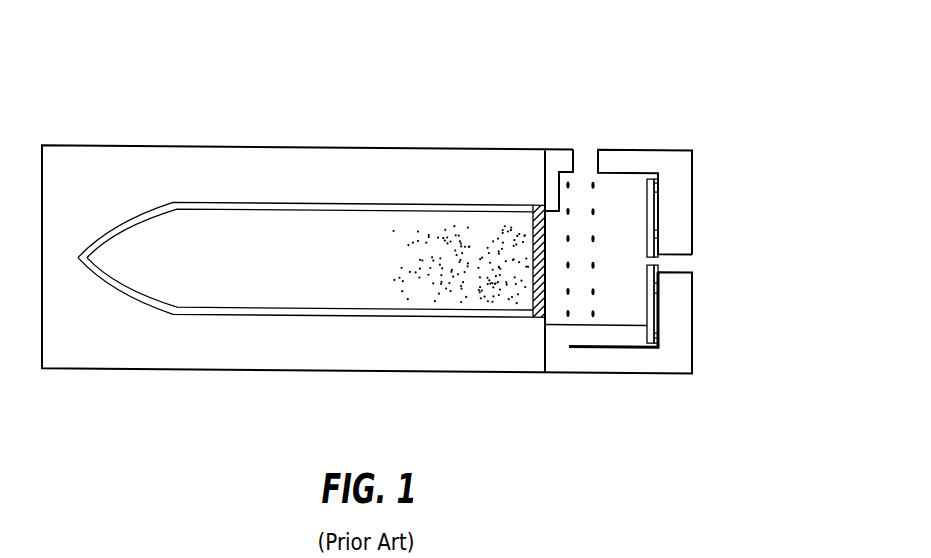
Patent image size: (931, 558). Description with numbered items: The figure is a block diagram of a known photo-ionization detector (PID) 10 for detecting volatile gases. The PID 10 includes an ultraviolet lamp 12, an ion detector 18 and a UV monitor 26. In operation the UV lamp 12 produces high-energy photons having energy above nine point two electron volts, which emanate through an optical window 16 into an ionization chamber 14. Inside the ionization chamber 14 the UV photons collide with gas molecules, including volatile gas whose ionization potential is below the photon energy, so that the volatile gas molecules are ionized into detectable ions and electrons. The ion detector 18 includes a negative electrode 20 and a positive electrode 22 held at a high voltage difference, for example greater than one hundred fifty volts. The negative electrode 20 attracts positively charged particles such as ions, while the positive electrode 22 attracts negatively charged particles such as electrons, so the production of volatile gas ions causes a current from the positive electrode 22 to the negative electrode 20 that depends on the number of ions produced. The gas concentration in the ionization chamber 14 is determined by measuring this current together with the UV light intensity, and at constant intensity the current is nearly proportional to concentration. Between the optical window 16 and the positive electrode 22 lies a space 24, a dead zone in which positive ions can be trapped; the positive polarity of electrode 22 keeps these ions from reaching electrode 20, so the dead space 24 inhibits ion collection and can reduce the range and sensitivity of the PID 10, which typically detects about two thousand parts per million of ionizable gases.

The photo-ionization detector 10 is at (527, 76).
The ultraviolet lamp 12 is at (307, 295).
The ionization chamber 14 is at (629, 273).
The optical window 16 is at (532, 293).
The ion detector 18 is at (619, 205).
The negative electrode 20 is at (598, 215).
The positive electrode 22 is at (568, 177).
The space 24 is at (559, 251).
The UV monitor 26 is at (650, 208).